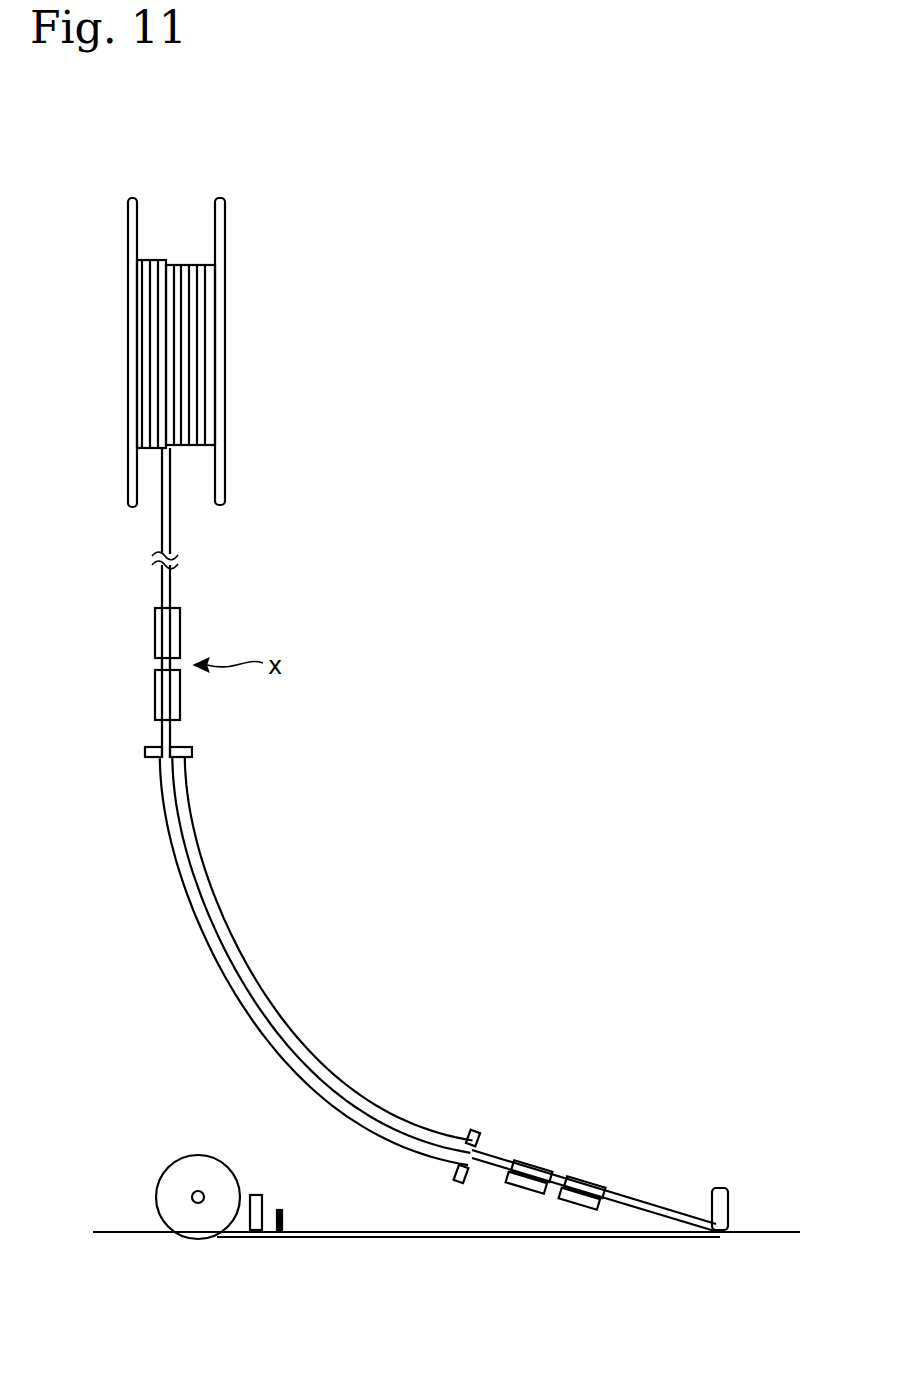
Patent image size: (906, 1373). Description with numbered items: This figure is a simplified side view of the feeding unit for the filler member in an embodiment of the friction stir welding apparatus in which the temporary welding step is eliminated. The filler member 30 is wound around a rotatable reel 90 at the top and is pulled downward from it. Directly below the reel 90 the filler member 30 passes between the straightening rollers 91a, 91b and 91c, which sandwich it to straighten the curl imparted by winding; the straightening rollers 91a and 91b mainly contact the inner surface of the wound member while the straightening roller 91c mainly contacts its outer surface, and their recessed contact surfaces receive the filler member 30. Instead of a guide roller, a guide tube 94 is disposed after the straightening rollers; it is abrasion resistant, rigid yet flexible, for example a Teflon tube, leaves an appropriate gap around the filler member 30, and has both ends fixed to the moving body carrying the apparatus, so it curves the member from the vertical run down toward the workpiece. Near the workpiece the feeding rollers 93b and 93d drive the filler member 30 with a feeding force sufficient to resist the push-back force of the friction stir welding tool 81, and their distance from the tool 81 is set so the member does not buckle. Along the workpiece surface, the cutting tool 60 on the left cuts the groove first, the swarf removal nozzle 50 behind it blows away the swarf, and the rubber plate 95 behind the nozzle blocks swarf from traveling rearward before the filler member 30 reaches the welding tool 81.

The reel 90 is at (223, 221).
The filler member 30 is at (170, 532).
The straightening roller 91a is at (180, 628).
The straightening roller 91b is at (160, 664).
The straightening roller 91c is at (157, 700).
The guide tube 94 is at (217, 904).
The feeding roller 93b is at (537, 1170).
The feeding roller 93d is at (587, 1186).
The friction stir welding tool 81 is at (720, 1188).
The cutting tool 60 is at (197, 1166).
The swarf removal nozzle 50 is at (258, 1240).
The rubber plate 95 is at (283, 1240).